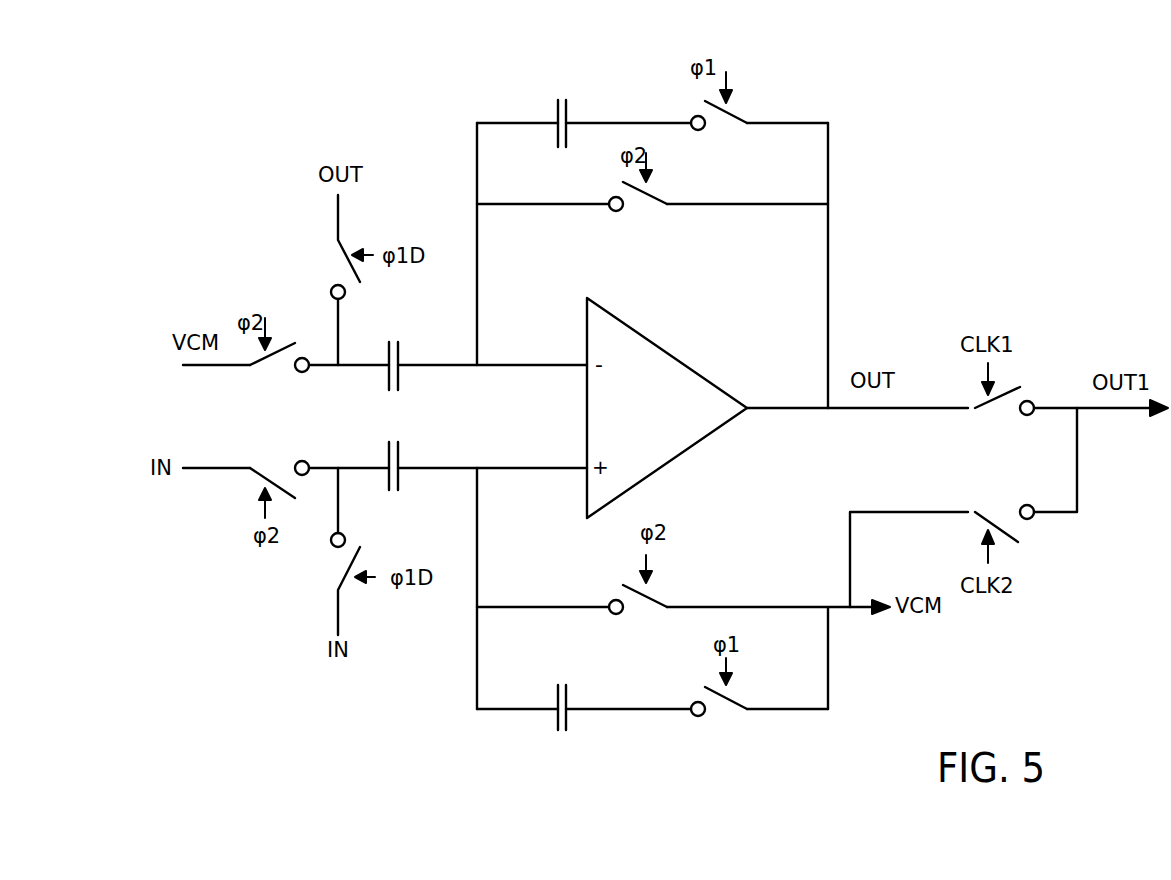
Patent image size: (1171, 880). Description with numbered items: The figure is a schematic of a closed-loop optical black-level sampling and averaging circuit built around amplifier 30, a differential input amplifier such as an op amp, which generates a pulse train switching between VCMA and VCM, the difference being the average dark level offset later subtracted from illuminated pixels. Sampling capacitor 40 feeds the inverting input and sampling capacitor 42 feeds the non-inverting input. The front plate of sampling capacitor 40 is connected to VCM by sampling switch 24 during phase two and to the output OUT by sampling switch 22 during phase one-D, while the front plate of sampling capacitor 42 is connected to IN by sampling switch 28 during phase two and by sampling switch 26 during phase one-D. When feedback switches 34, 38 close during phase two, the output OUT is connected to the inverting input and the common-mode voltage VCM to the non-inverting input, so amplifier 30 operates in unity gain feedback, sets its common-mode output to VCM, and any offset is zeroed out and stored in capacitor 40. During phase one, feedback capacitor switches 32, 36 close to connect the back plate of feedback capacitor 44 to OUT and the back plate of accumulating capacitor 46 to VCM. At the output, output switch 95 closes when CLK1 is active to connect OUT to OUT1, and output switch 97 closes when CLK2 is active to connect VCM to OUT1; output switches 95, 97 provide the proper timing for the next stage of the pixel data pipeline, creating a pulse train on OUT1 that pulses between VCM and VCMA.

The sampling switch 22 is at (333, 287).
The sampling switch 24 is at (300, 373).
The sampling switch 26 is at (332, 547).
The sampling switch 28 is at (298, 461).
The amplifier 30 is at (667, 408).
The feedback capacitor switch 32 is at (705, 128).
The feedback switch 34 is at (622, 210).
The feedback capacitor switch 36 is at (705, 714).
The feedback switch 38 is at (622, 613).
The sampling capacitor 40 is at (386, 388).
The sampling capacitor 42 is at (403, 443).
The feedback capacitor 44 is at (555, 148).
The accumulating capacitor 46 is at (555, 732).
The output switch 95 is at (1022, 417).
The output switch 97 is at (1022, 505).